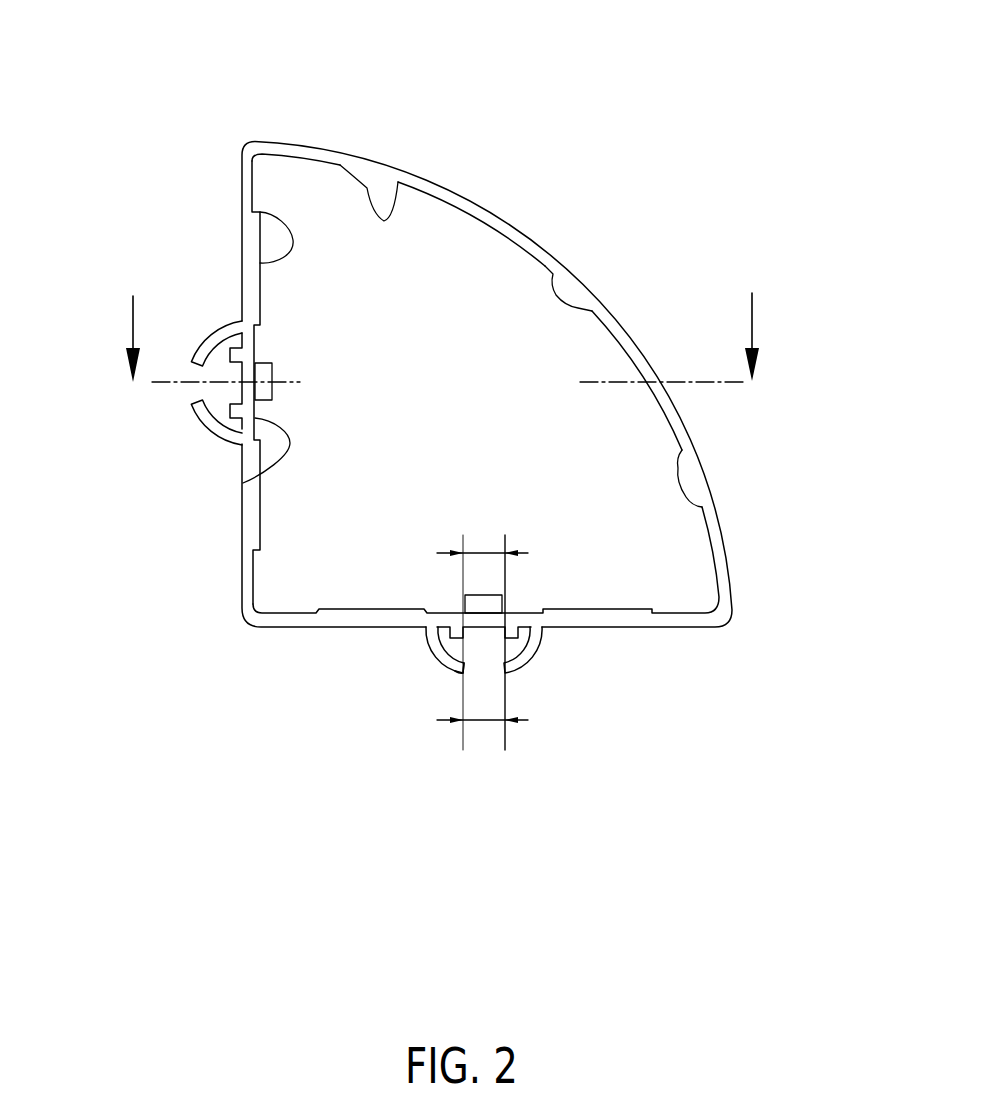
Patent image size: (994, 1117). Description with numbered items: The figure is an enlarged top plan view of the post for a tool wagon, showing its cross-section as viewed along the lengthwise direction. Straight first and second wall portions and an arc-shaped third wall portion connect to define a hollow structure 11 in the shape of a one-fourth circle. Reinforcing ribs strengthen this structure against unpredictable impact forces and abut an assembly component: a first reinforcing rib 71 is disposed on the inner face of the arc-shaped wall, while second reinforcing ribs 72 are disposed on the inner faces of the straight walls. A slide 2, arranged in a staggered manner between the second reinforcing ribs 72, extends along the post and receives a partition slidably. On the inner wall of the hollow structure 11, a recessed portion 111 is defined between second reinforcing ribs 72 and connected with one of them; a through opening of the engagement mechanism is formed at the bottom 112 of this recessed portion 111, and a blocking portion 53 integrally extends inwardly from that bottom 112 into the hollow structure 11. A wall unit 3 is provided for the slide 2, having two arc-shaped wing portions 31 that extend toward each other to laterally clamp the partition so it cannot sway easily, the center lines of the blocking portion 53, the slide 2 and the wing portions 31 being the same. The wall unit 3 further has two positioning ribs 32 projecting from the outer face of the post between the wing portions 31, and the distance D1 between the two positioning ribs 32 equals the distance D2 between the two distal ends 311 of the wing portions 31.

The hollow structure 11 is at (470, 305).
The recessed portion 111 is at (278, 337).
The bottom of recessed portion 112 is at (243, 483).
The first reinforcing rib 71 is at (398, 219).
The second reinforcing rib 72 is at (281, 221).
The slide 2 is at (192, 395).
The wall unit 3 is at (210, 438).
The wing portion 31 is at (440, 653).
The distal end of wing portion 311 is at (460, 673).
The positioning rib 32 is at (515, 632).
The blocking portion 53 is at (487, 600).
The distance between positioning ribs D1 is at (483, 552).
The distance between distal ends of wing portions D2 is at (485, 720).